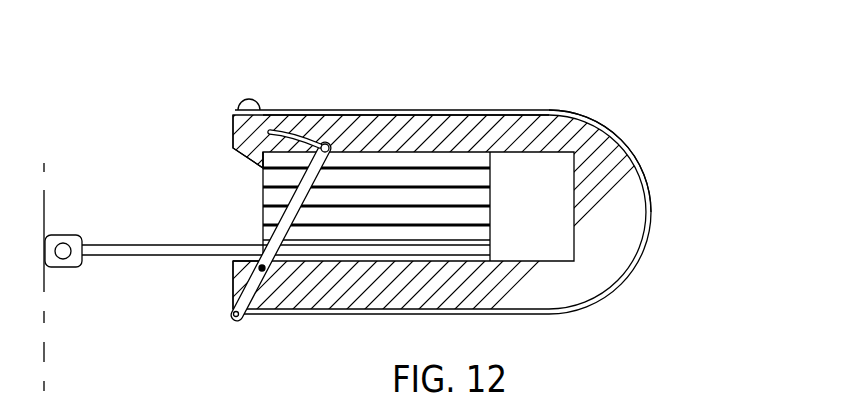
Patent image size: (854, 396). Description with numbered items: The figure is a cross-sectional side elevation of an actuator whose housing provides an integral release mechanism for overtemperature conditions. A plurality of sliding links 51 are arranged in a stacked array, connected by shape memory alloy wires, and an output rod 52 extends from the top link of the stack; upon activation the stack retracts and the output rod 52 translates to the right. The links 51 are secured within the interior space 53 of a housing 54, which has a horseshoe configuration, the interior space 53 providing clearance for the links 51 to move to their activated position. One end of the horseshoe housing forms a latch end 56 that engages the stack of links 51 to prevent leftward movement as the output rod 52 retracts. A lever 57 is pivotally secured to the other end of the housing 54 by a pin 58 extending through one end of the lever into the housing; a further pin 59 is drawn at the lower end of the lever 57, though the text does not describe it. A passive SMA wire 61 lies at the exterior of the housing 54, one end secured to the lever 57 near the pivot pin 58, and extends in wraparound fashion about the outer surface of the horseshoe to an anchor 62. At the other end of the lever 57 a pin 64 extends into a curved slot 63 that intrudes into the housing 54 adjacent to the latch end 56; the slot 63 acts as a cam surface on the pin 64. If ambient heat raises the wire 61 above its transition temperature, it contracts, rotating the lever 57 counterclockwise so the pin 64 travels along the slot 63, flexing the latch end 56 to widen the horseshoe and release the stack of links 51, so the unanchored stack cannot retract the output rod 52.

The sliding links 51 is at (432, 172).
The output rod 52 is at (147, 245).
The interior space 53 is at (590, 118).
The housing 54 is at (612, 183).
The latch end 56 is at (245, 163).
The lever 57 is at (230, 282).
The pin 58 is at (263, 272).
The lever 59 is at (235, 317).
The passive SMA wire 61 is at (547, 110).
The anchor 62 is at (255, 102).
The curved slot 63 is at (308, 117).
The pin 64 is at (372, 117).